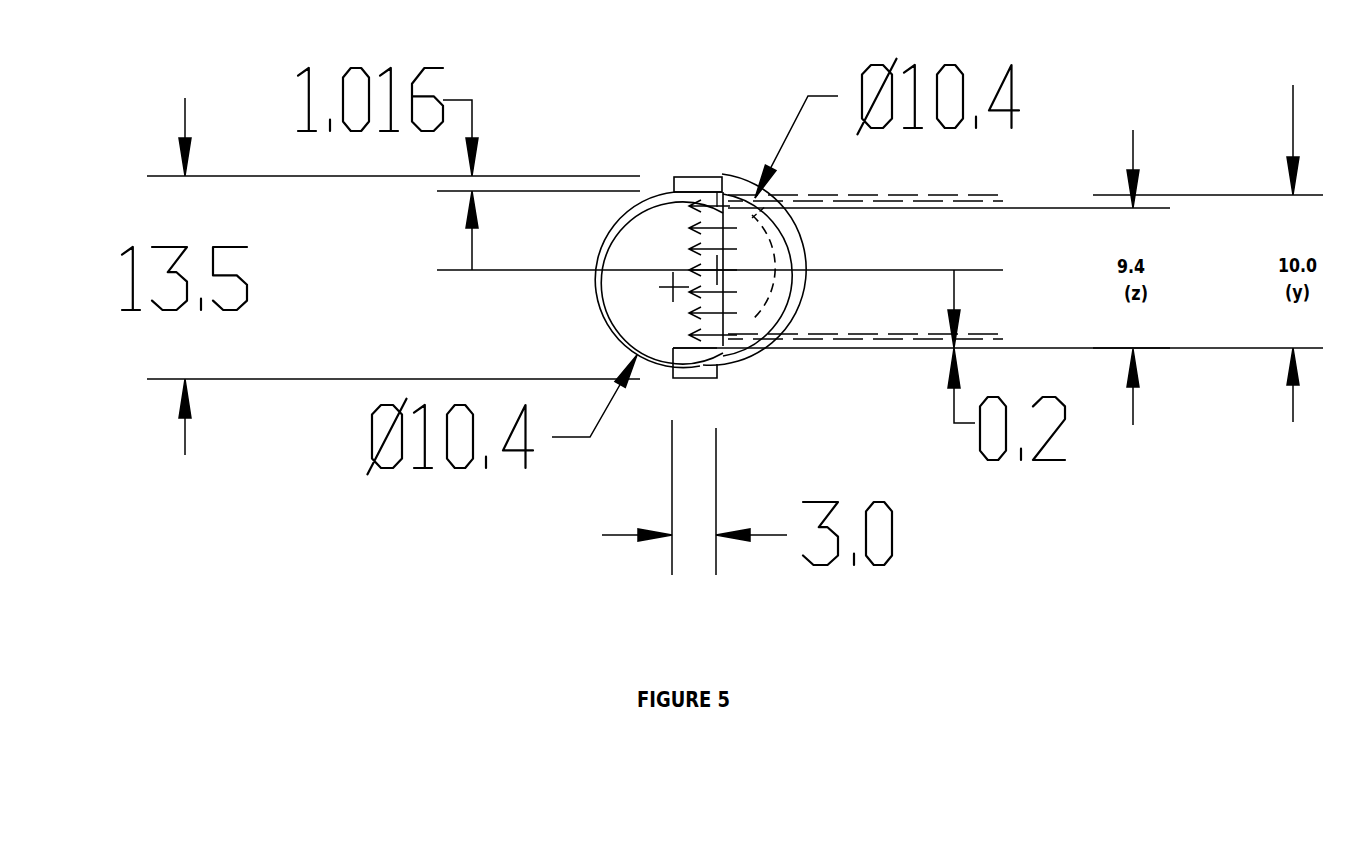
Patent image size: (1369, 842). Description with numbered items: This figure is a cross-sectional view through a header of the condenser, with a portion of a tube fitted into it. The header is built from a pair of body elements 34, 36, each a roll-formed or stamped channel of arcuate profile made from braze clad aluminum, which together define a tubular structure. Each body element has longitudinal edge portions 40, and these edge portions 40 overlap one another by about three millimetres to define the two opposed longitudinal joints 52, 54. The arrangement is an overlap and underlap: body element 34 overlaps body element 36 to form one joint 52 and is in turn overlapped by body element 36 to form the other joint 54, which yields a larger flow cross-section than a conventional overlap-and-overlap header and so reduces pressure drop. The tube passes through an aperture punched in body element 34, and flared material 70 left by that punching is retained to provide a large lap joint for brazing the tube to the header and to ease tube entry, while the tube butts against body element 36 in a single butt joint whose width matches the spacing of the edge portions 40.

The body element 34 is at (737, 350).
The body element 36 is at (590, 285).
The longitudinal edge portions 40 is at (693, 183).
The longitudinal joint 52 is at (732, 375).
The longitudinal joint 54 is at (666, 186).
The flared material 70 is at (775, 245).